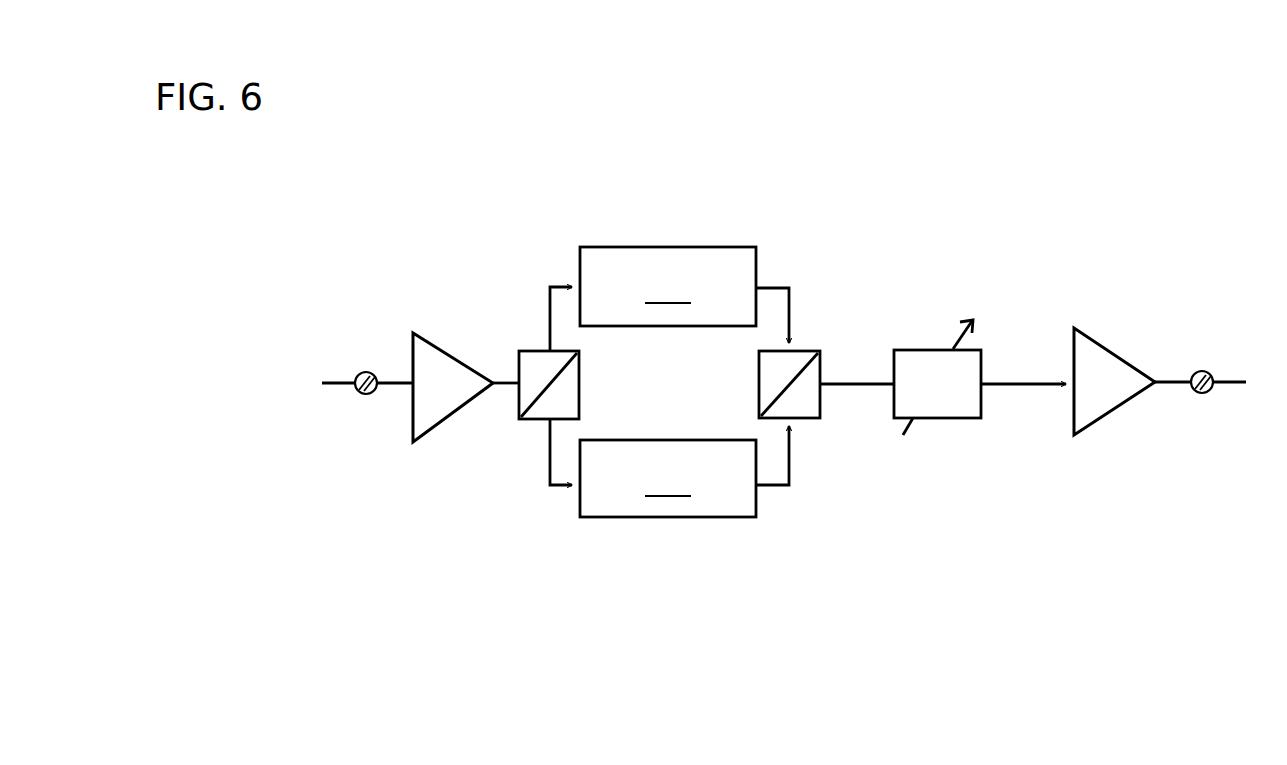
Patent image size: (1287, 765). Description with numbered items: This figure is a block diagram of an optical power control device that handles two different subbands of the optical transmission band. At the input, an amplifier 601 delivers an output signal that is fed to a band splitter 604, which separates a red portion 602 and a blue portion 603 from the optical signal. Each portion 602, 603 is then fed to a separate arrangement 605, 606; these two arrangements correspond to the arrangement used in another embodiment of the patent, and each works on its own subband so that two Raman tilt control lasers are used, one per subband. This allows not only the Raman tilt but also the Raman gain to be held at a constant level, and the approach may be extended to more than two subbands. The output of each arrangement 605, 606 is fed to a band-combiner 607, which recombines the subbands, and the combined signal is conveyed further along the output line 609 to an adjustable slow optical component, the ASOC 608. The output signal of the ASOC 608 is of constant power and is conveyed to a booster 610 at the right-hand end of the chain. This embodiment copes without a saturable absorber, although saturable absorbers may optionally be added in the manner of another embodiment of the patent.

The amplifier 601 is at (428, 432).
The red portion 602 is at (550, 327).
The blue portion 603 is at (550, 447).
The band splitter 604 is at (579, 388).
The arrangement 605 is at (634, 247).
The arrangement 606 is at (636, 517).
The band-combiner 607 is at (818, 420).
The adjustable slow optical component (ASOC) 608 is at (940, 420).
The output line 609 is at (1010, 382).
The booster 610 is at (1107, 412).